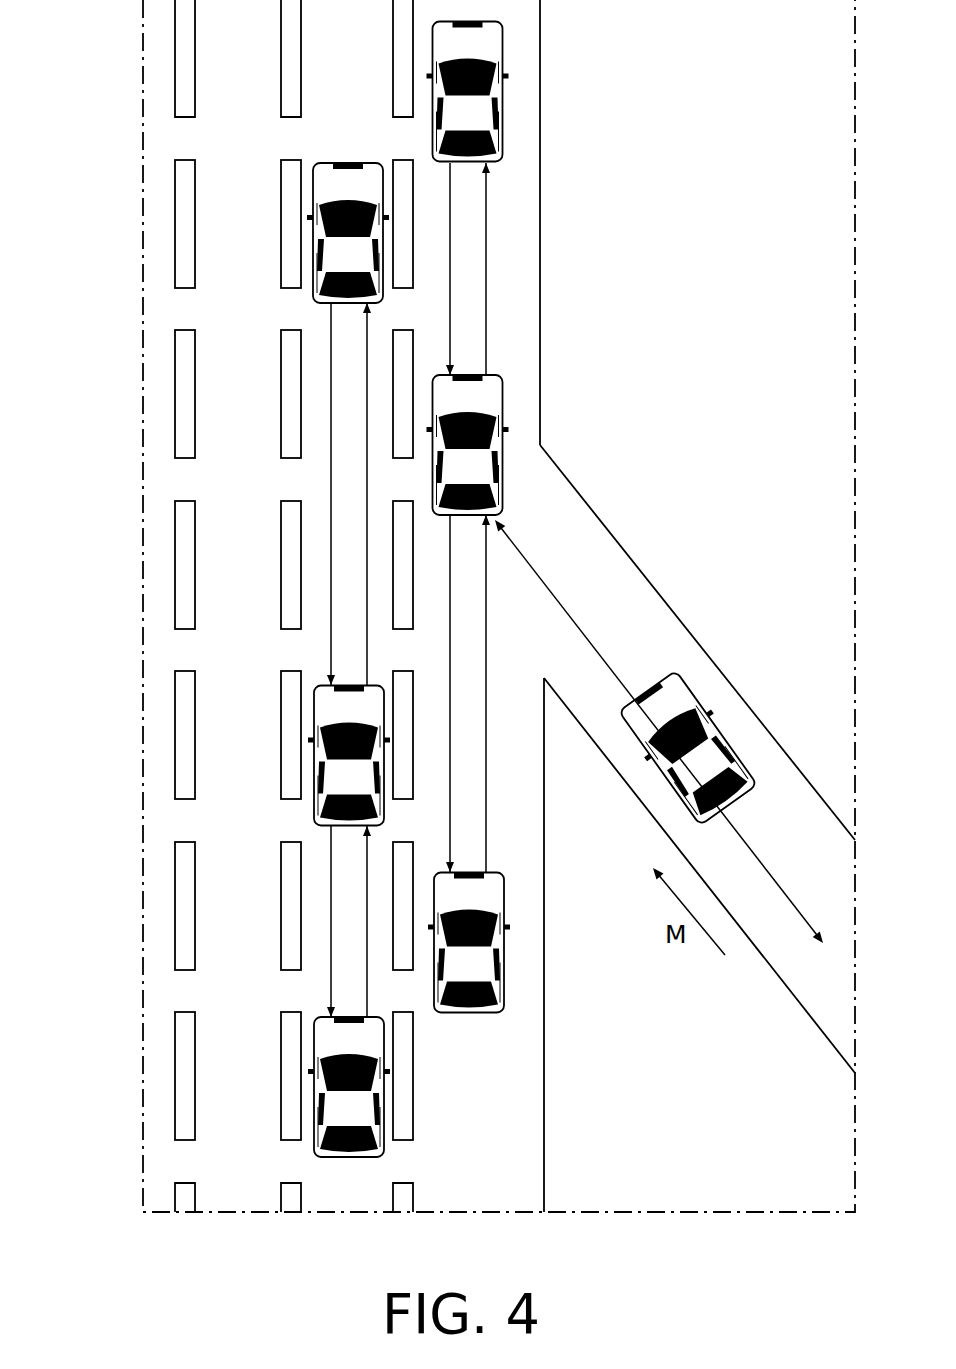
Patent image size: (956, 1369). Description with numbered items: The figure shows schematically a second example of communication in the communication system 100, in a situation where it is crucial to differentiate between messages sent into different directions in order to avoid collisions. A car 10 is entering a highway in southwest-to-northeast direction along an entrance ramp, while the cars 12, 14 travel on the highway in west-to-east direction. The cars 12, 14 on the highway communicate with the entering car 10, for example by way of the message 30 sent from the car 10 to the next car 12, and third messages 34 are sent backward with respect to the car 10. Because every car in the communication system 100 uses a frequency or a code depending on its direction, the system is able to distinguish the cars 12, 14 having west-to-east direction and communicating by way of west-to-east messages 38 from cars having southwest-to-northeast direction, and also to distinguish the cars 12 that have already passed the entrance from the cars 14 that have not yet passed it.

The communication system 100 is at (130, 190).
The car 10 is at (708, 712).
The cars 12 is at (312, 220).
The cars 14 is at (312, 740).
The message 30 is at (555, 598).
The third messages 34 is at (748, 843).
The west-to-east messages 38 is at (465, 273).